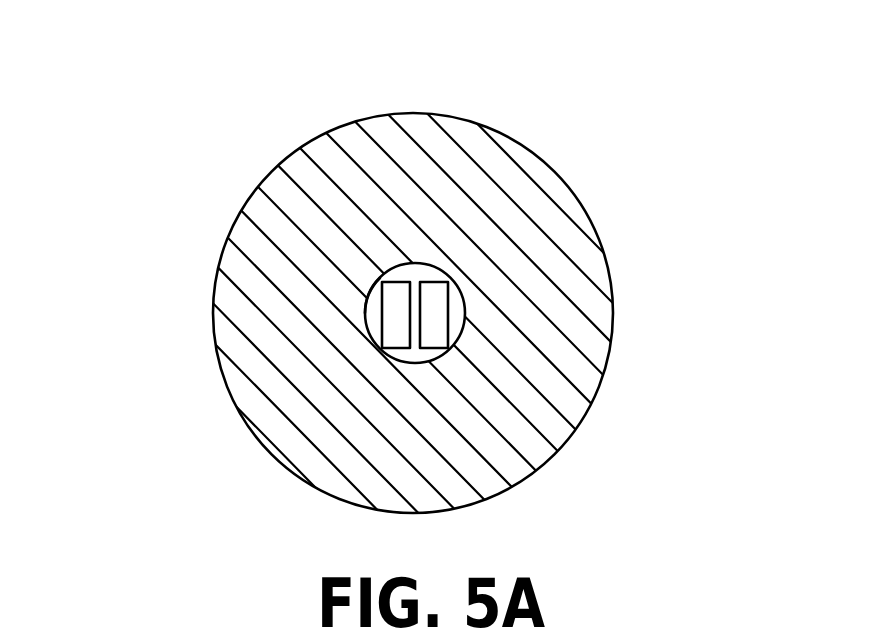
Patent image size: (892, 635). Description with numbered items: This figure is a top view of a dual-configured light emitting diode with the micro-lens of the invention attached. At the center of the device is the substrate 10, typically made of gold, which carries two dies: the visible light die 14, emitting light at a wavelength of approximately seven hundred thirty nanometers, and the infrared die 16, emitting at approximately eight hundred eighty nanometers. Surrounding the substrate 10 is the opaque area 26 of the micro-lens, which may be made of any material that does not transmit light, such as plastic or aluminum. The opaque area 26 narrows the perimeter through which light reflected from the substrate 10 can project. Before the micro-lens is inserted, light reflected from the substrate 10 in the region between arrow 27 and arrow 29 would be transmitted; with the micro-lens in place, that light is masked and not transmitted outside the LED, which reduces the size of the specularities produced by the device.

The substrate 10 is at (415, 273).
The visible light die 14 is at (393, 318).
The infrared die 16 is at (428, 330).
The opaque area 26 is at (418, 133).
The arrow 27 is at (213, 282).
The arrow 29 is at (382, 278).